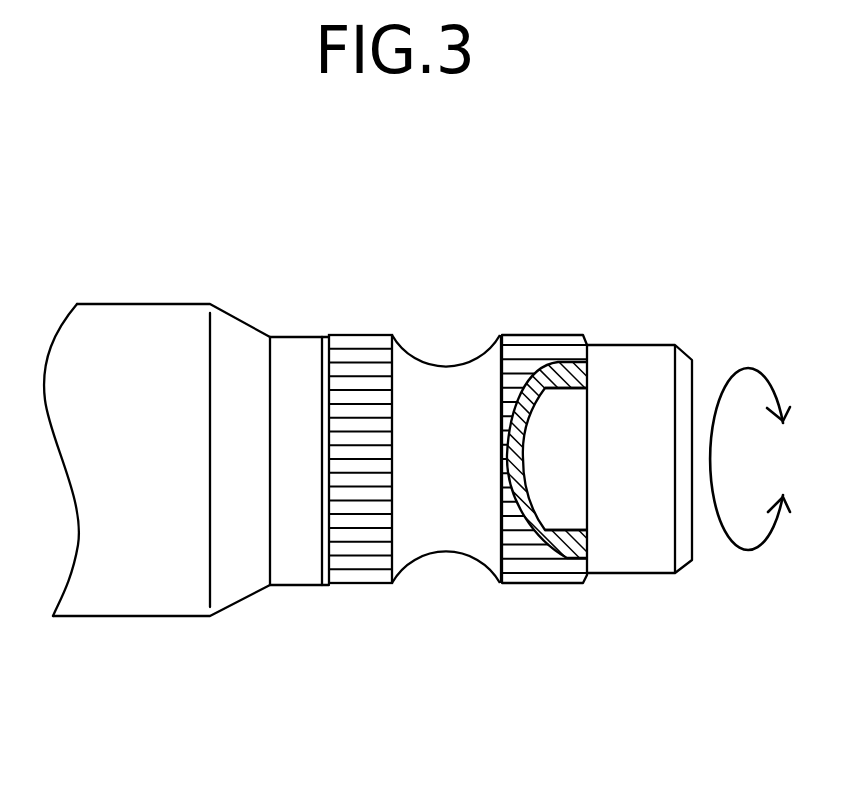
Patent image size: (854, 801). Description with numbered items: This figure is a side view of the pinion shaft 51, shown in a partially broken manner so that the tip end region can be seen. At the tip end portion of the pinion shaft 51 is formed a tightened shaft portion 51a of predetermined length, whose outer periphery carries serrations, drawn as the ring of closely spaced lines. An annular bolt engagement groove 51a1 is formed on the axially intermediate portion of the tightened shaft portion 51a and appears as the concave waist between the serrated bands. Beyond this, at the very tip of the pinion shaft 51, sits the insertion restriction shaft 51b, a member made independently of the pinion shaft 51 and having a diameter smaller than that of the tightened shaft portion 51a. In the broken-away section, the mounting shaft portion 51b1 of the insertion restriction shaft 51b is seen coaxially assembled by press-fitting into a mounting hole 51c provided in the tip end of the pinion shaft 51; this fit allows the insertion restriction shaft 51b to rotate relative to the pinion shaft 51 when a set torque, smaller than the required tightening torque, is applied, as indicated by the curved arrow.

The pinion shaft 51 is at (102, 603).
The tightened shaft portion 51a is at (537, 335).
The bolt engagement groove 51a1 is at (443, 362).
The insertion restriction shaft 51b is at (663, 357).
The mounting shaft portion 51b1 is at (582, 497).
The mounting hole 51c is at (575, 528).